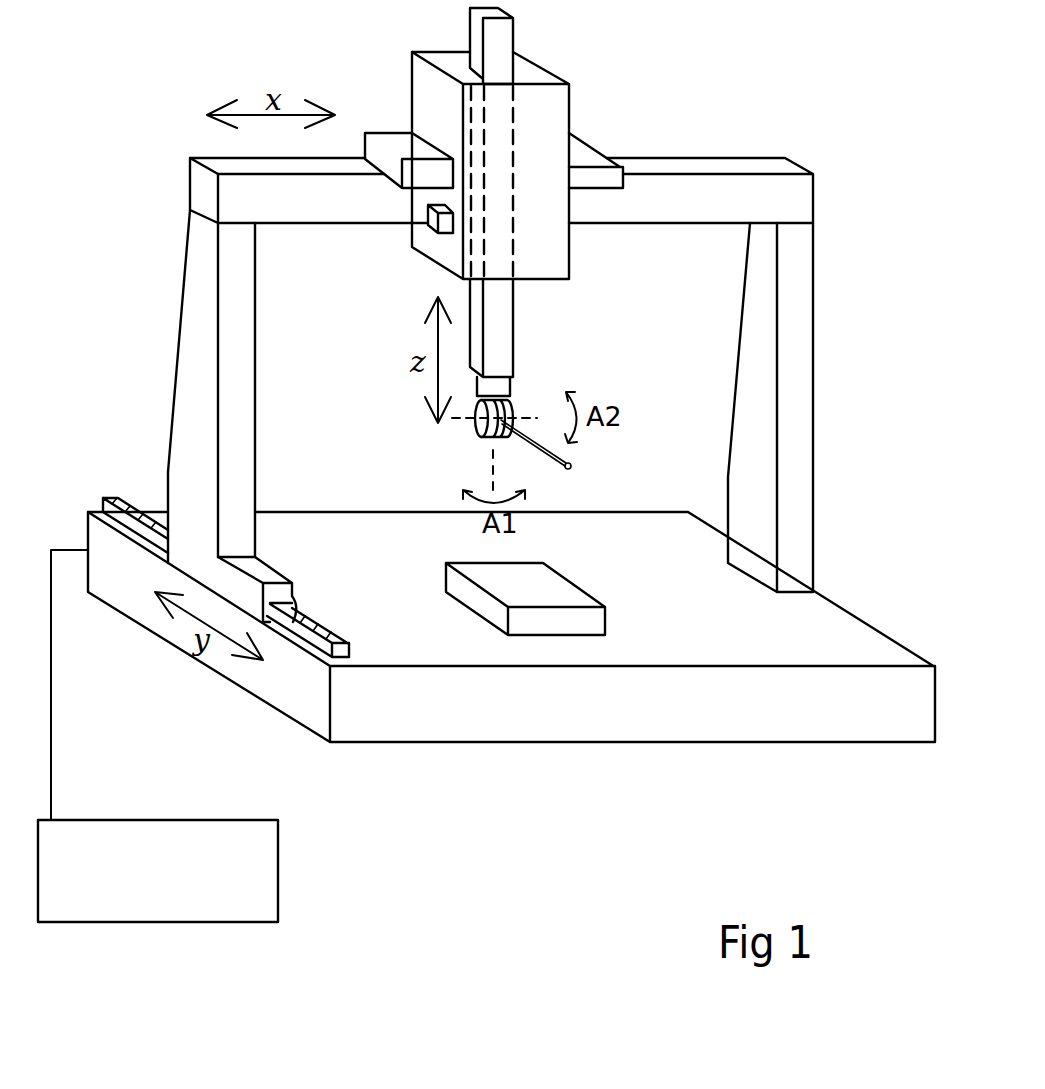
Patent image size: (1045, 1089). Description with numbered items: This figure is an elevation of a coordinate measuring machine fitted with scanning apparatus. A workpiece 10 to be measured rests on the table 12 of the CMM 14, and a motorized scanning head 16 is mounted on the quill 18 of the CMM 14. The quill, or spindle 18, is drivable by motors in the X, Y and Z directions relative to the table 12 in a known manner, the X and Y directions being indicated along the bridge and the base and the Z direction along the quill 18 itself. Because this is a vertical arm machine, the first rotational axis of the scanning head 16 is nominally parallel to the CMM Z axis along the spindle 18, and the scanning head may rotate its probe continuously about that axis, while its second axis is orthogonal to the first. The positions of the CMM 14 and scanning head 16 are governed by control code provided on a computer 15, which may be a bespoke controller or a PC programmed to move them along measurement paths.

The workpiece 10 is at (593, 615).
The table 12 is at (538, 705).
The coordinate measuring machine 14 is at (745, 88).
The computer 15 is at (265, 878).
The motorized scanning head 16 is at (445, 437).
The quill 18 is at (497, 328).